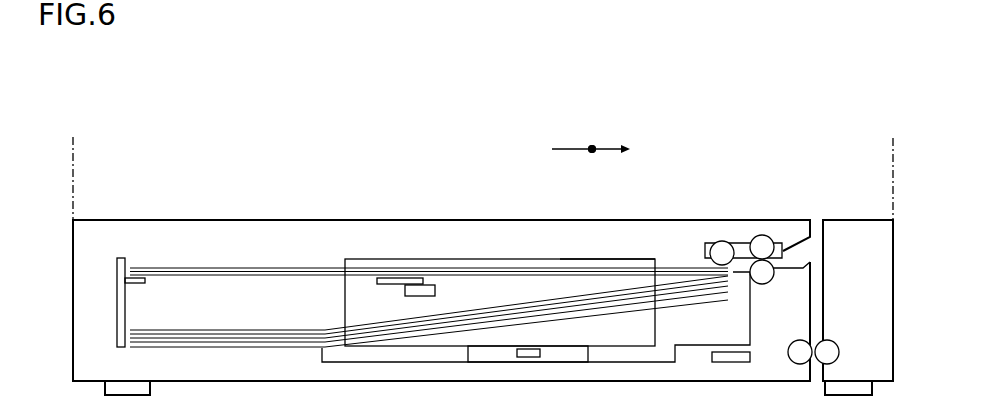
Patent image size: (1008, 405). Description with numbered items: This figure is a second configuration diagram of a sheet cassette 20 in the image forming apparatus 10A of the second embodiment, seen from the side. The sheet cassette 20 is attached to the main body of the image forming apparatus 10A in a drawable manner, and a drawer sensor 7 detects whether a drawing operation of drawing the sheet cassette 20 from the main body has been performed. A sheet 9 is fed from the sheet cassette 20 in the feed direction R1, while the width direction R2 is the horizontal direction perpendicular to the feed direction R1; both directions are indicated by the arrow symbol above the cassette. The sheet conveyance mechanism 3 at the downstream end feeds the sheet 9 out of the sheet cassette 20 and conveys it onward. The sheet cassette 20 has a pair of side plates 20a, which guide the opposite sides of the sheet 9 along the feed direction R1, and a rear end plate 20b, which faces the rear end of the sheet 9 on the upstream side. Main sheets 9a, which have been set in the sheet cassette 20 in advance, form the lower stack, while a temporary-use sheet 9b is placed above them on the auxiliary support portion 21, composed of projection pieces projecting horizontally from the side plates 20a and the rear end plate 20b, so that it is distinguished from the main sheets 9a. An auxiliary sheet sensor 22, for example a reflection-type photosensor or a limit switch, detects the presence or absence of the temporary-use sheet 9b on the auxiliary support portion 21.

The image forming apparatus 10A is at (82, 120).
The sheet conveyance mechanism 3 is at (832, 272).
The drawer sensor 7 is at (730, 362).
The sheet 9 is at (429, 288).
The main sheets 9a is at (320, 330).
The temporary-use sheet 9b is at (318, 266).
The sheet cassette 20 is at (170, 219).
The side plates 20a is at (580, 258).
The rear end plate 20b is at (115, 302).
The auxiliary support portion 21 is at (137, 285).
The auxiliary sheet sensor 22 is at (421, 297).
The feed direction R1 is at (607, 152).
The width direction R2 is at (590, 147).